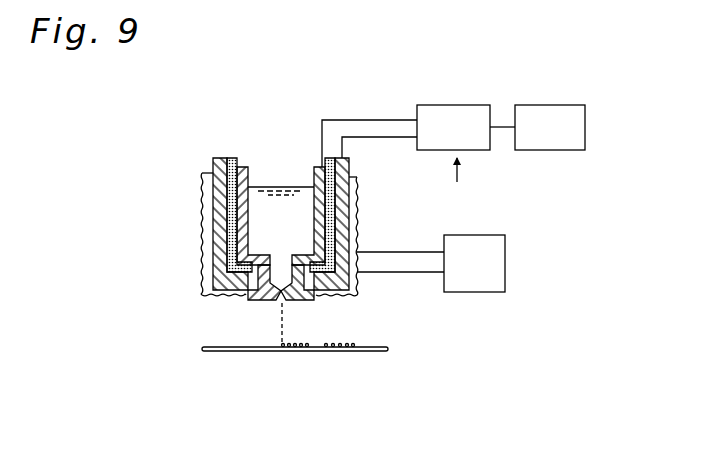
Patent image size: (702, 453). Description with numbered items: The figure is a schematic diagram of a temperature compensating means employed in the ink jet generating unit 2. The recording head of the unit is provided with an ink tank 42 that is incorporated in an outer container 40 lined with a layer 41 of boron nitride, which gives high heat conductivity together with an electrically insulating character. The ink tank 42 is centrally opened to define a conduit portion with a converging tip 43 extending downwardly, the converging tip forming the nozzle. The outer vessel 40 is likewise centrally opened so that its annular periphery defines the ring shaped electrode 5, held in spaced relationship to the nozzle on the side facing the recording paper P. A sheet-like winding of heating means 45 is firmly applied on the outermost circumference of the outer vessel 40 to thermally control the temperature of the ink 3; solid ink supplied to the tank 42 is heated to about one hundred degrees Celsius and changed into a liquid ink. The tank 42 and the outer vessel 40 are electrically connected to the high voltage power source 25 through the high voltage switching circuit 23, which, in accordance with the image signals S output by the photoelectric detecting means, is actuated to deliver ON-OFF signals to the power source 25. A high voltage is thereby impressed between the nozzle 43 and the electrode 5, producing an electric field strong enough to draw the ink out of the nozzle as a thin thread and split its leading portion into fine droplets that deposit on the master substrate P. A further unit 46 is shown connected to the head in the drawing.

The ink jet generating unit 2 is at (242, 203).
The ink 3 is at (291, 243).
The ring shaped electrode 5 is at (308, 303).
The high voltage switching circuit 23 is at (455, 127).
The high voltage power source 25 is at (548, 127).
The outer container 40 is at (220, 160).
The layer of boron nitride 41 is at (232, 157).
The ink tank 42 is at (248, 170).
The converging tip 43 is at (272, 302).
The heating means 45 is at (200, 190).
The heater power source 46 is at (488, 253).
The image signals S is at (452, 186).
The master substrate P is at (262, 352).